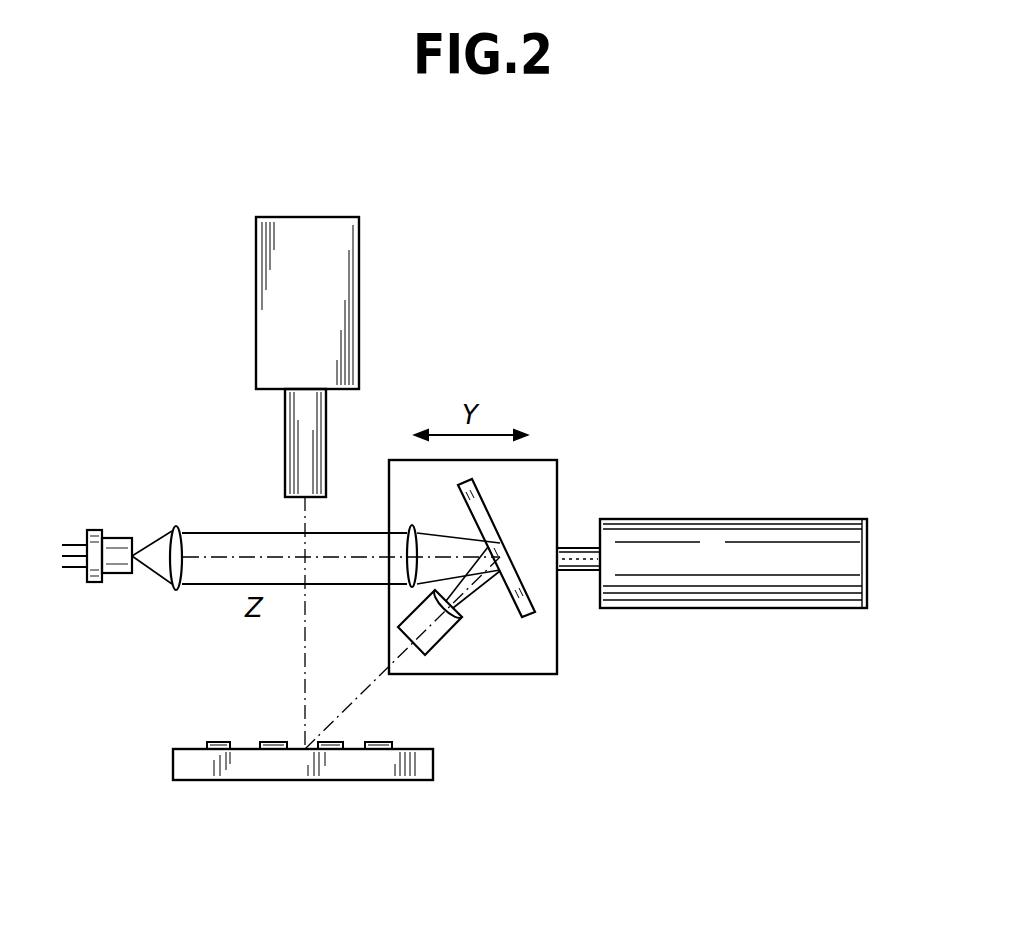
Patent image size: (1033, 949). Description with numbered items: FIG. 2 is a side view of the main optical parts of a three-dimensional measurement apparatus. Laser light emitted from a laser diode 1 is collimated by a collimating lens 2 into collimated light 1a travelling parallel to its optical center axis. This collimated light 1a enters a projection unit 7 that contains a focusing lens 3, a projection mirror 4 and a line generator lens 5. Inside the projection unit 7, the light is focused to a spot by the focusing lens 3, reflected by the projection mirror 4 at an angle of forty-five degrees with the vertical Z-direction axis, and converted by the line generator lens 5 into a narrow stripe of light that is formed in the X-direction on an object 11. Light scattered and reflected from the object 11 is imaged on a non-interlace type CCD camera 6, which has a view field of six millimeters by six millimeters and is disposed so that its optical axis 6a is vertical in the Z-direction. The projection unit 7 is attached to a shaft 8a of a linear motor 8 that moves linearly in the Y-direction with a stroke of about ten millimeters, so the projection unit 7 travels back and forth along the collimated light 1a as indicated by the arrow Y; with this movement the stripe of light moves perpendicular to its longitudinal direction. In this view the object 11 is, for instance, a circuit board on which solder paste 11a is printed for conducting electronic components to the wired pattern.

The laser diode 1 is at (95, 530).
The collimated light 1a is at (232, 533).
The collimating lens 2 is at (172, 527).
The focusing lens 3 is at (410, 524).
The projection mirror 4 is at (483, 528).
The line generator lens 5 is at (443, 637).
The CCD camera 6 is at (359, 268).
The optical axis 6a is at (303, 670).
The projection unit 7 is at (557, 650).
The linear motor 8 is at (746, 519).
The shaft 8a is at (582, 548).
The object 11 is at (293, 780).
The solder paste 11a is at (207, 742).